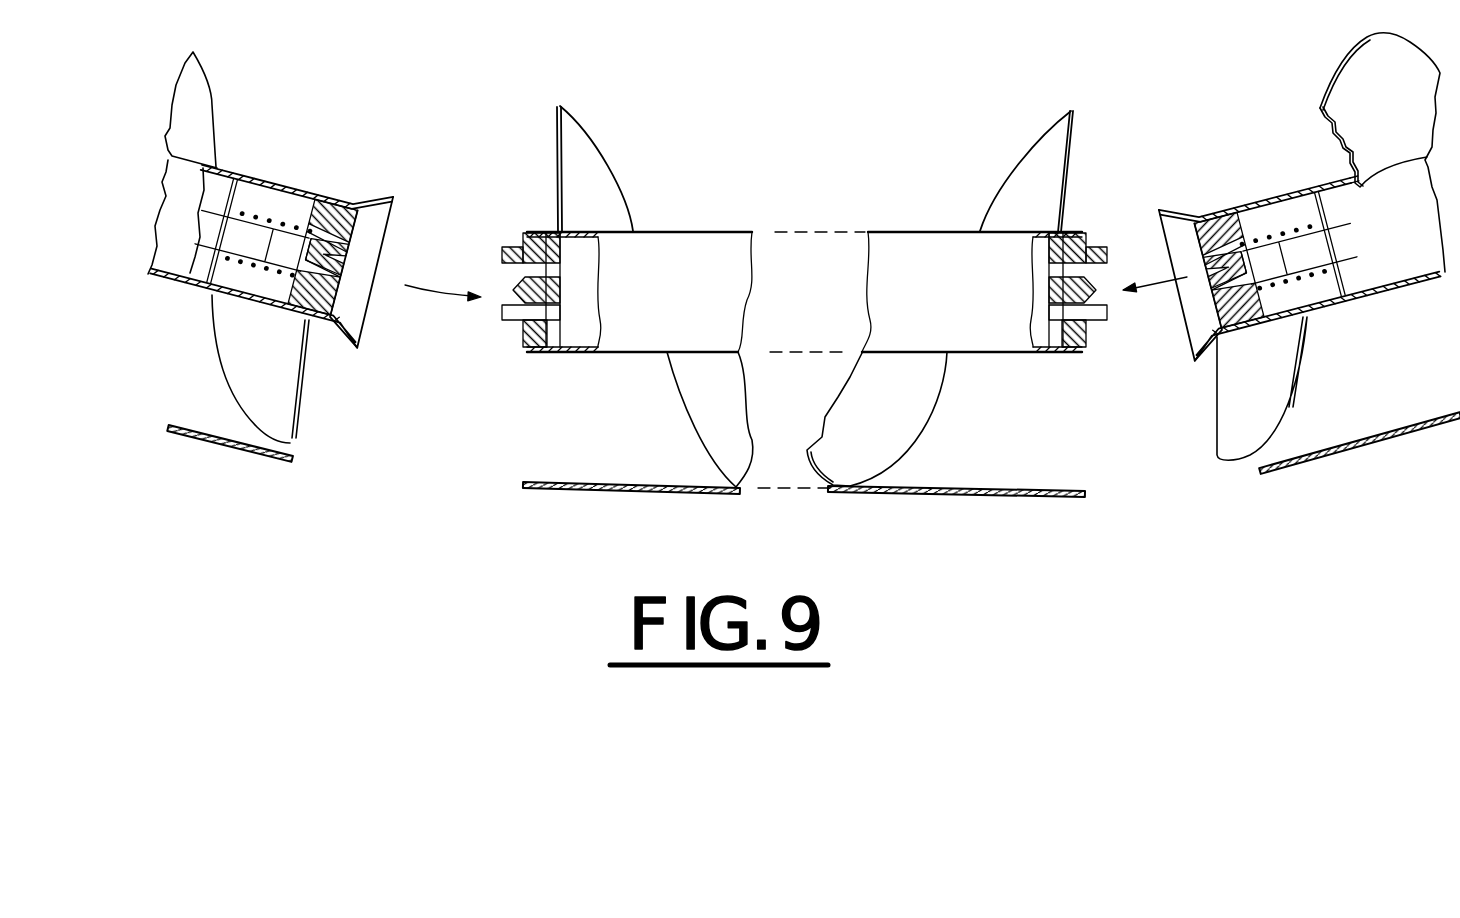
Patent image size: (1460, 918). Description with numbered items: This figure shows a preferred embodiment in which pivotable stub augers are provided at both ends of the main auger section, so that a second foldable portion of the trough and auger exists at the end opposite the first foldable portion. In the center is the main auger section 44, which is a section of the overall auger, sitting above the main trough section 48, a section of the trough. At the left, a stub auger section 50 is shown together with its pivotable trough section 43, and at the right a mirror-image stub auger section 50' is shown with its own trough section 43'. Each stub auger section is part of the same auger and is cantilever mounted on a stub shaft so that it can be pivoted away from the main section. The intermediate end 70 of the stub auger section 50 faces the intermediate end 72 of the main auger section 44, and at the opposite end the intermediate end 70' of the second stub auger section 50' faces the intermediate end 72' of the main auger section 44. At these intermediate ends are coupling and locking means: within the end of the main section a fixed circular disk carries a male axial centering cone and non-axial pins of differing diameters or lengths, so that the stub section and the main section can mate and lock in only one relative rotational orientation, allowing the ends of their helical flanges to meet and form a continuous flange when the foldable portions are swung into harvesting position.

The main auger section 44 is at (713, 172).
The stub auger section 50 is at (313, 247).
The stub auger section 50' is at (1284, 237).
The intermediate end 70 is at (369, 301).
The intermediate end 70' is at (1179, 253).
The intermediate end 72 is at (514, 256).
The intermediate end 72' is at (1091, 334).
The trough section 43 is at (232, 470).
The trough section 43' is at (1359, 468).
The main trough section 48 is at (576, 494).